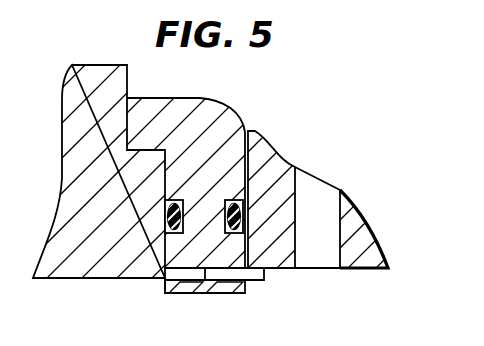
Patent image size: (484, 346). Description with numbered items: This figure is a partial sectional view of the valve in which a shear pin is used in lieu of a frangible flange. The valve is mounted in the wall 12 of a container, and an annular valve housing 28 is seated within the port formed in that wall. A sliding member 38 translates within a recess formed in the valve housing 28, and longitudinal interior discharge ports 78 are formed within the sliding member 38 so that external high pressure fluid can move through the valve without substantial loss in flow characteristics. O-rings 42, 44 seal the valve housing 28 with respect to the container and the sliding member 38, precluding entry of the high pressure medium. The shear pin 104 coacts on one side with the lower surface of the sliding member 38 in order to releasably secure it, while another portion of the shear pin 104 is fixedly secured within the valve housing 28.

The wall 12 is at (107, 190).
The valve housing 28 is at (221, 133).
The O-ring 42 is at (163, 222).
The O-ring 44 is at (237, 202).
The longitudinal interior discharge port 78 is at (327, 240).
The sliding member 38 is at (362, 249).
The shear pin 104 is at (266, 271).